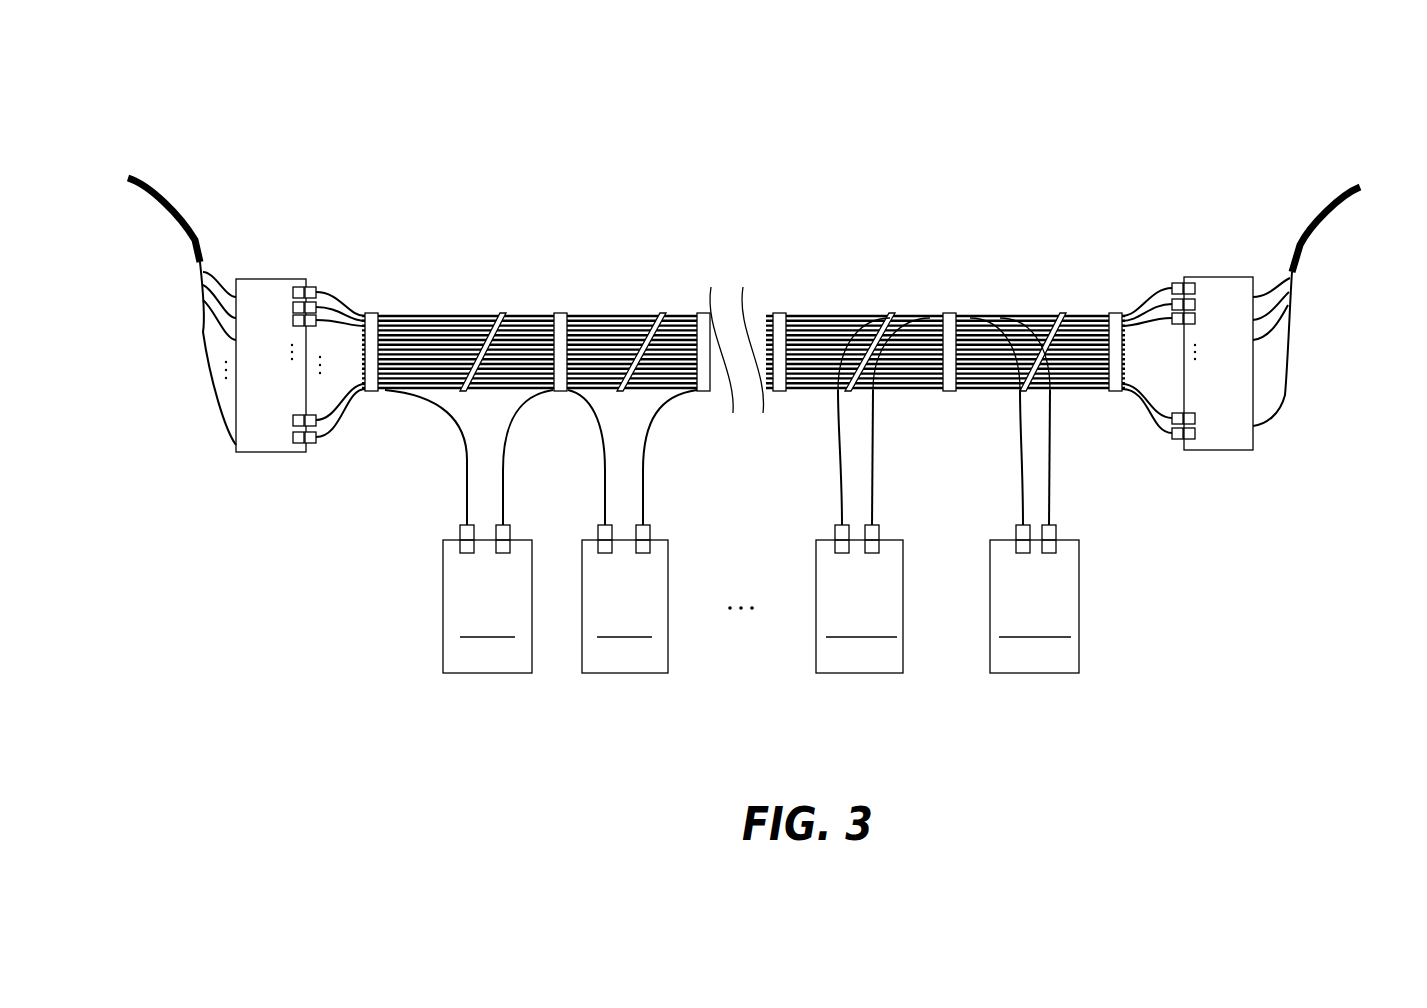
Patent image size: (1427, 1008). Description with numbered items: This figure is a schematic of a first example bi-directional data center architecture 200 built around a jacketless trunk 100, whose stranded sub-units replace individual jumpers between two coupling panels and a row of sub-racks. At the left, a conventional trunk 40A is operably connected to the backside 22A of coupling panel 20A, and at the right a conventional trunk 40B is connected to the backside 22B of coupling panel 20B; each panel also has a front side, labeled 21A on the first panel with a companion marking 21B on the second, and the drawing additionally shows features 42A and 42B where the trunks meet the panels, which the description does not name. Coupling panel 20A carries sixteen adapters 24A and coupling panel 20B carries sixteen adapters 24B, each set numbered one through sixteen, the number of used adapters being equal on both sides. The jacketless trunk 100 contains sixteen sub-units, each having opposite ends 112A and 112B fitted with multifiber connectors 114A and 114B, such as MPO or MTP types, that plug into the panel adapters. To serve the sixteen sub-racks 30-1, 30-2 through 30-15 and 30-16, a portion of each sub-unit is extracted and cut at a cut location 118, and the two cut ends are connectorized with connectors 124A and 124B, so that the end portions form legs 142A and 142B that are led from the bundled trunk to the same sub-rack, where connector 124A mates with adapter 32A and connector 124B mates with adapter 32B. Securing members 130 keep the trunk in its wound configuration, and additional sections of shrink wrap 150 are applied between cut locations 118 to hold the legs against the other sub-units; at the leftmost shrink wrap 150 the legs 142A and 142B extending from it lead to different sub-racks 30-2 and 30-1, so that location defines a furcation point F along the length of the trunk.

The data center architecture 200 is at (428, 120).
The jacketless trunk 100 is at (617, 212).
The securing member 130 is at (663, 313).
The shrink wrap 150 is at (560, 313).
The cut location 118 is at (350, 412).
The furcation point F is at (553, 400).
The backside of coupling panel 22A is at (236, 451).
The coupling panel 20A is at (262, 279).
The adapters 24A is at (300, 287).
The front side of coupling panel 21A is at (312, 452).
The optical fiber connector 114A is at (317, 288).
The sub-unit end 112A is at (352, 298).
The conventional trunk 40A is at (165, 200).
The first trunk cable fibers 42A is at (197, 333).
The backside of coupling panel 22B is at (1253, 446).
The coupling panel 20B is at (1212, 277).
The adapters 24B is at (1178, 283).
The second connector side 21B is at (1184, 452).
The optical fiber connector 114B is at (1172, 288).
The sub-unit end 112B is at (1146, 428).
The conventional trunk 40B is at (1330, 207).
The second trunk cable fibers 42B is at (1324, 324).
The leg 142A is at (462, 452).
The leg 142B is at (504, 463).
The connector 124A is at (460, 528).
The connector 124B is at (510, 528).
The sub-rack 30-1 is at (487, 606).
The sub-rack 30-2 is at (625, 606).
The sub-rack 30-15 is at (859, 606).
The sub-rack 30-16 is at (1034, 606).
The adapter 32A is at (450, 541).
The adapter 32B is at (526, 541).